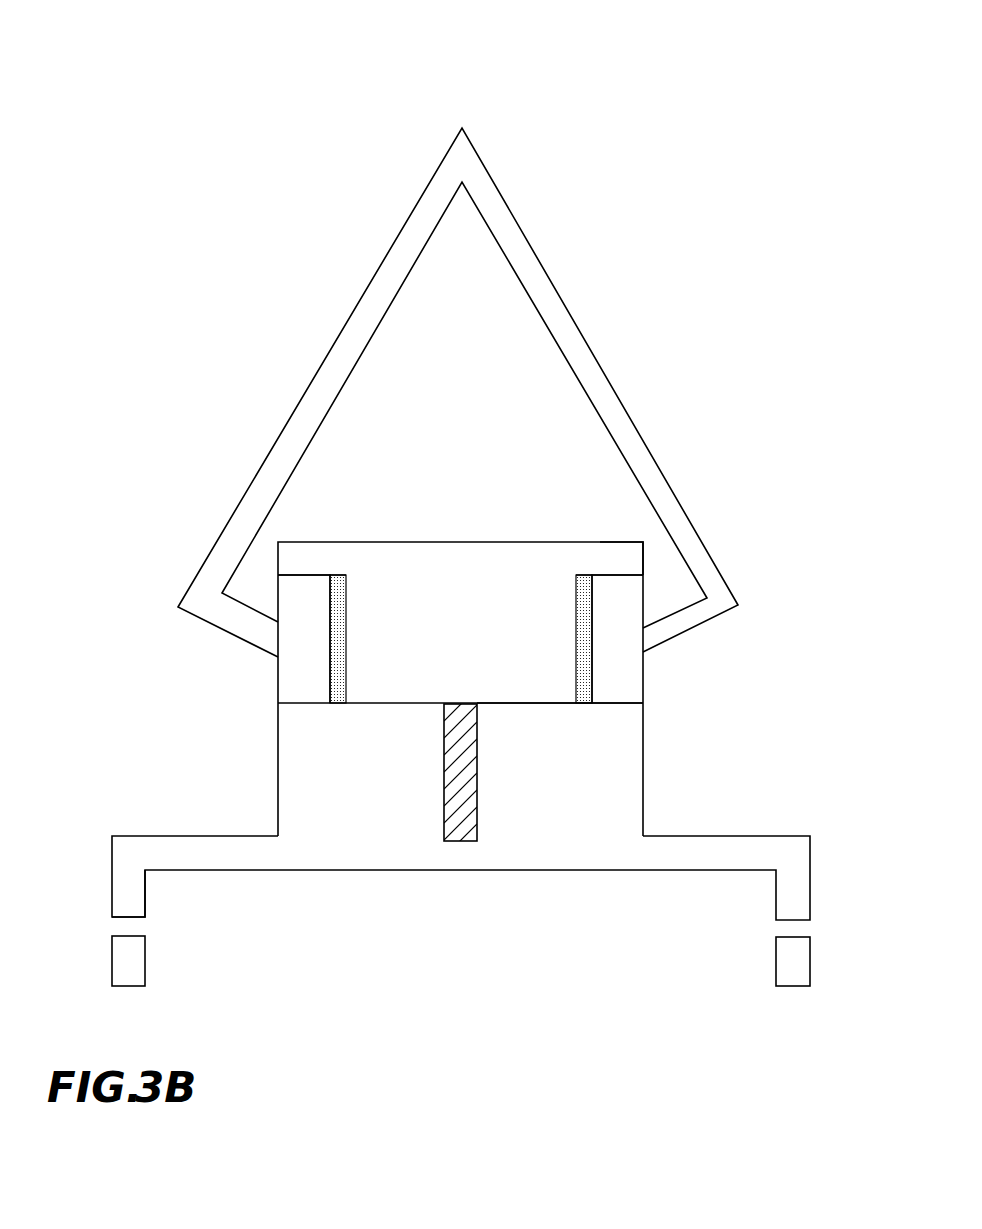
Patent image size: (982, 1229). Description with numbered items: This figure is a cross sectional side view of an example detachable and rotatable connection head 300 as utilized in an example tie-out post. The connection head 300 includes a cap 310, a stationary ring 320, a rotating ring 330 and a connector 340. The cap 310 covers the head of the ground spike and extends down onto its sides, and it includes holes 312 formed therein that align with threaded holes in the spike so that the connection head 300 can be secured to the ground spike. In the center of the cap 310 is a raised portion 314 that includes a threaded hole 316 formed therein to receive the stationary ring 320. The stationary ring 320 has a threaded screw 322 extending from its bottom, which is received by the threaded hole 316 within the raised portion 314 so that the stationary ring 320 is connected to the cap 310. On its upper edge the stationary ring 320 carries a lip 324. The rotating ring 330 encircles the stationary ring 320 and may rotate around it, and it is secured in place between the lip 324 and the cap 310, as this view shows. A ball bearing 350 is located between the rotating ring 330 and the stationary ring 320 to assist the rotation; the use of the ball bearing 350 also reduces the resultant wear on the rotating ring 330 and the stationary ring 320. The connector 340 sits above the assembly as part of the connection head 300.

The connection head 300 is at (276, 167).
The cap 310 is at (525, 873).
The holes 312 is at (143, 923).
The raised portion 314 is at (608, 775).
The threaded hole 316 is at (478, 748).
The stationary ring 320 is at (442, 542).
The threaded screw 322 is at (462, 772).
The lip 324 is at (635, 560).
The rotating ring 330 is at (295, 675).
The connector 340 is at (540, 262).
The ball bearing 350 is at (587, 610).